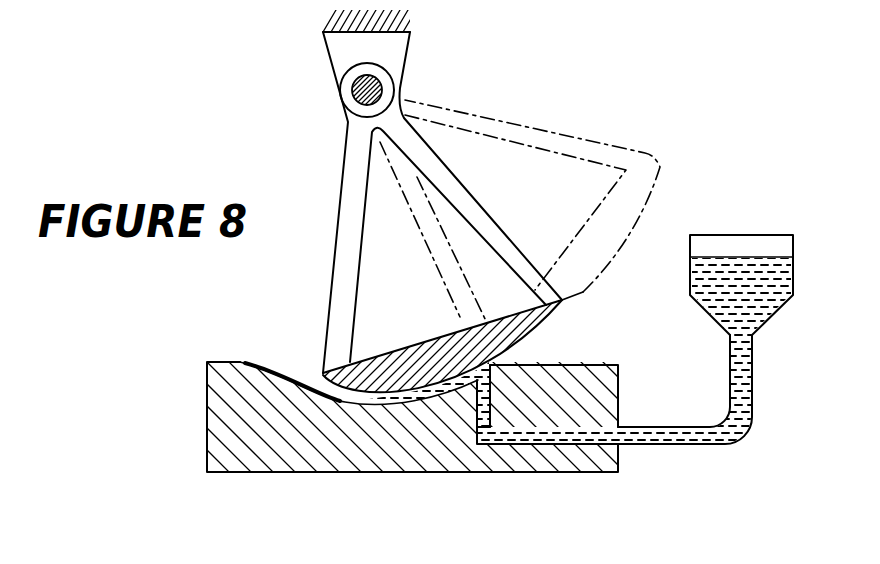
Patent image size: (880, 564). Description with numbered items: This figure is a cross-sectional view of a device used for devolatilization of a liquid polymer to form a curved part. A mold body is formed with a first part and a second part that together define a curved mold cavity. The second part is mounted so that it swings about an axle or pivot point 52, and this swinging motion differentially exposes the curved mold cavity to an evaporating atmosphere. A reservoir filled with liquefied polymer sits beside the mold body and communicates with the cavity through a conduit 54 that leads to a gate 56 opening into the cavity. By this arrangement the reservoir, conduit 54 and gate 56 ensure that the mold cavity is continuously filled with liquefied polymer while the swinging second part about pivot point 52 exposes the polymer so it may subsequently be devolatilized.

The pivot point 52 is at (378, 82).
The gate 56 is at (491, 367).
The conduit 54 is at (648, 437).